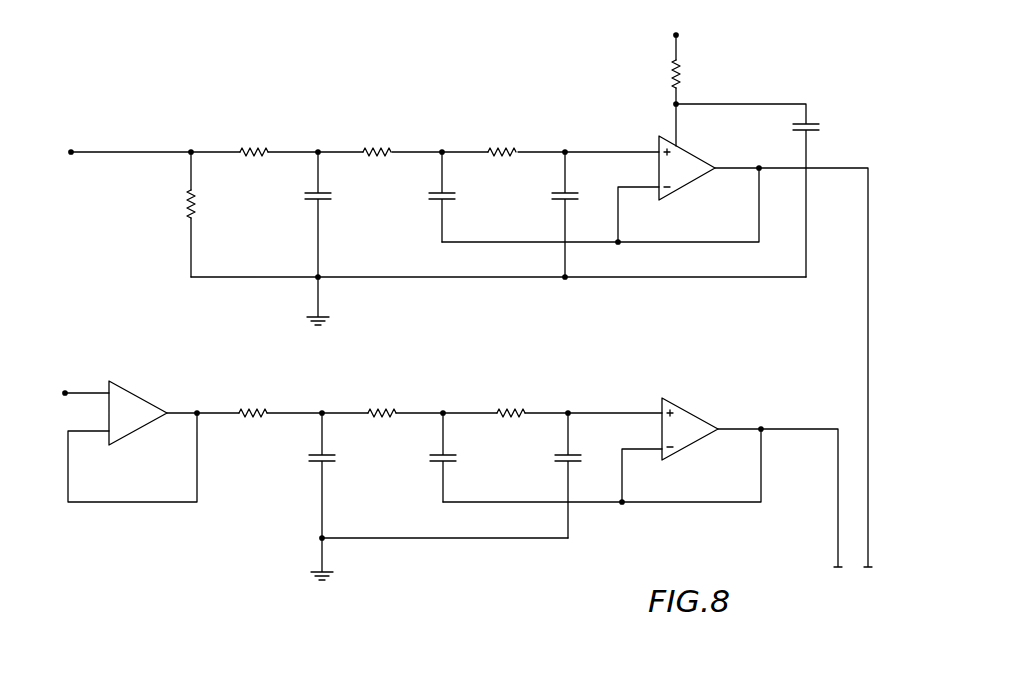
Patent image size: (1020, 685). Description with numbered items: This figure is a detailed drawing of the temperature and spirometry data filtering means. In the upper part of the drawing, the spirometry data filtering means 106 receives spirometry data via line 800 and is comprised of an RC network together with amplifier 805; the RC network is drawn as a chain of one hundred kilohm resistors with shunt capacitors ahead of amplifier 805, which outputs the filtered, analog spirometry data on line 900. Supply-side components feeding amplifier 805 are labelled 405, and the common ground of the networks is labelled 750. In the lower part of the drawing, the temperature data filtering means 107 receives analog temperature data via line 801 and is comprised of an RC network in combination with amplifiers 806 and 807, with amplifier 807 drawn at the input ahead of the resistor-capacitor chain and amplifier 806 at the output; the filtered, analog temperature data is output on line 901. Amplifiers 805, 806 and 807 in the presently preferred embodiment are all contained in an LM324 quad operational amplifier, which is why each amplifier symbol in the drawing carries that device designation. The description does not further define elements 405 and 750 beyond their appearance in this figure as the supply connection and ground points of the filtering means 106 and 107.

The line 800 is at (90, 149).
The filtering means 106 is at (288, 84).
The +12V supply connection 405 is at (672, 38).
The amplifier 805 is at (692, 183).
The line 900 is at (829, 171).
The ground 750 is at (331, 318).
The line 801 is at (72, 391).
The amplifier 807 is at (135, 400).
The temperature data filtering means 107 is at (192, 549).
The amplifier 806 is at (688, 406).
The line 901 is at (806, 427).